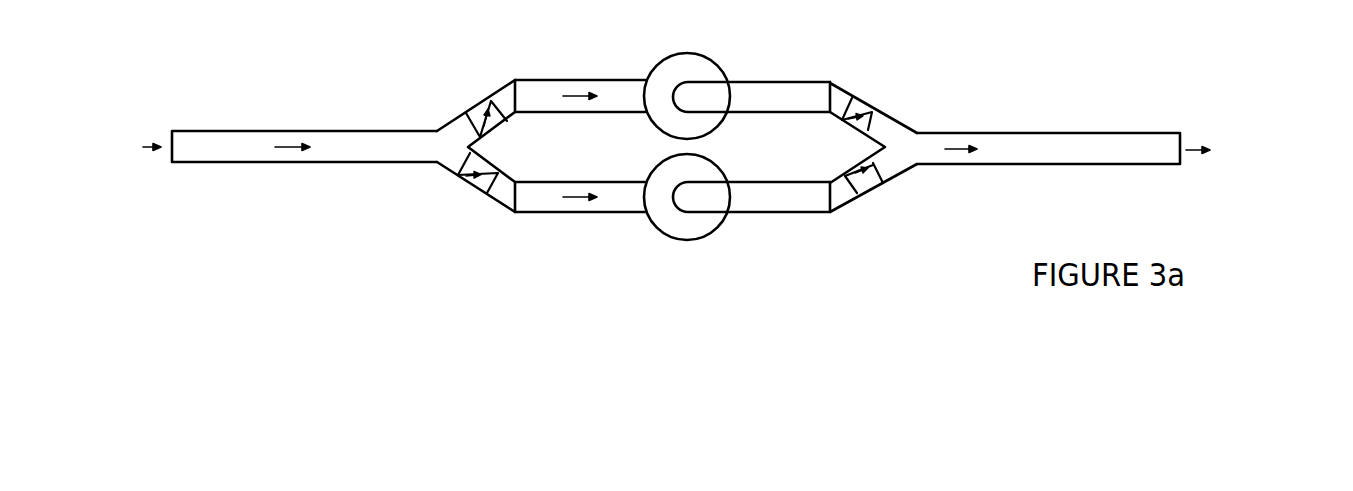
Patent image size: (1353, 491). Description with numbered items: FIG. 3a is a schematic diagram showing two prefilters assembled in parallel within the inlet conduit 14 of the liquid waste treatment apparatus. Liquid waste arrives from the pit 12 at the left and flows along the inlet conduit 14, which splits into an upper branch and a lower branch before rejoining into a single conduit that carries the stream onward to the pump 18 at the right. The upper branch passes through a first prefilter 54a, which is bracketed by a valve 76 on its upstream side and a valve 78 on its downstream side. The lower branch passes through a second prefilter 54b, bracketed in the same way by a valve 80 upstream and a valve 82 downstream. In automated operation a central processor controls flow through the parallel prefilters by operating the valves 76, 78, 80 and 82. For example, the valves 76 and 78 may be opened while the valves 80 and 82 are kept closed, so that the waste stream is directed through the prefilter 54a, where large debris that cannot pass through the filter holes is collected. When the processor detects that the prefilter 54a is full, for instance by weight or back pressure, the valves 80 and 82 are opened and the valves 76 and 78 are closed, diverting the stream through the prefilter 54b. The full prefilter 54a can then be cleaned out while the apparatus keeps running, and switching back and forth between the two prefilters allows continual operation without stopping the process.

The pit 12 is at (116, 152).
The inlet conduit 14 is at (236, 133).
The pump 18 is at (1255, 151).
The prefilter 54a is at (713, 52).
The prefilter 54b is at (717, 235).
The valve 76 is at (477, 105).
The valve 78 is at (870, 93).
The valve 80 is at (473, 190).
The valve 82 is at (880, 188).